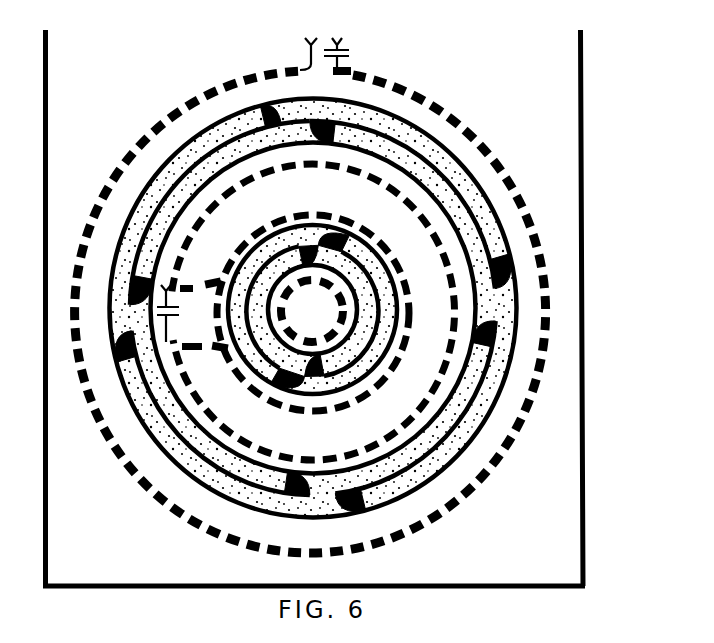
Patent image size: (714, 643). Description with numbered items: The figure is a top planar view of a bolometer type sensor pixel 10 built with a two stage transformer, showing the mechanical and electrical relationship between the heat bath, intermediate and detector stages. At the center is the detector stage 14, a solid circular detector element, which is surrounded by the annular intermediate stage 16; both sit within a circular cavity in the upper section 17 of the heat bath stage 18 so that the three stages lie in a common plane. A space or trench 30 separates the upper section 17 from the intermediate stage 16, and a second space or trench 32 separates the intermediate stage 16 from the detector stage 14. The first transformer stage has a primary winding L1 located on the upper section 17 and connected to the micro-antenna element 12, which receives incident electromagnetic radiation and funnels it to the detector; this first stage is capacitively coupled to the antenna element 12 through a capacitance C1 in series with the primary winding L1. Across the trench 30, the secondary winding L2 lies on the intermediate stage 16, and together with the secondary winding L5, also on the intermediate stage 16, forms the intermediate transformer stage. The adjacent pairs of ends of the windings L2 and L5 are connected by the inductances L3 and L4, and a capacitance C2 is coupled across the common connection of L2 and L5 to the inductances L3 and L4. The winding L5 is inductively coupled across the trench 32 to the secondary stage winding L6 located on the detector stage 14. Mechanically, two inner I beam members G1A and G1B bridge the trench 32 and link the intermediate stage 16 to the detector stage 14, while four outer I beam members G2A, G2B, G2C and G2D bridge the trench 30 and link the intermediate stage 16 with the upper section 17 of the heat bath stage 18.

The bolometer type sensor pixel 10 is at (527, 83).
The antenna element 12 is at (342, 27).
The detector stage 14 is at (326, 304).
The intermediate stage 16 is at (307, 297).
The upper section of the heat bath stage 17 is at (571, 218).
The heat bath stage 18 is at (587, 482).
The space (trench) 30 is at (150, 176).
The space (trench) 32 is at (327, 304).
The capacitance C1 is at (348, 52).
The capacitance C2 is at (178, 313).
The primary winding L1 is at (451, 112).
The secondary winding L2 is at (240, 188).
The inductance L3 is at (191, 284).
The inductance L4 is at (193, 352).
The secondary winding L5 is at (323, 212).
The secondary stage winding L6 is at (312, 306).
The inner I beam member G1A is at (254, 253).
The inner I beam member G1B is at (377, 345).
The outer I beam member G2A is at (197, 150).
The outer I beam member G2B is at (454, 440).
The outer I beam member G2C is at (444, 167).
The outer I beam member G2D is at (153, 413).